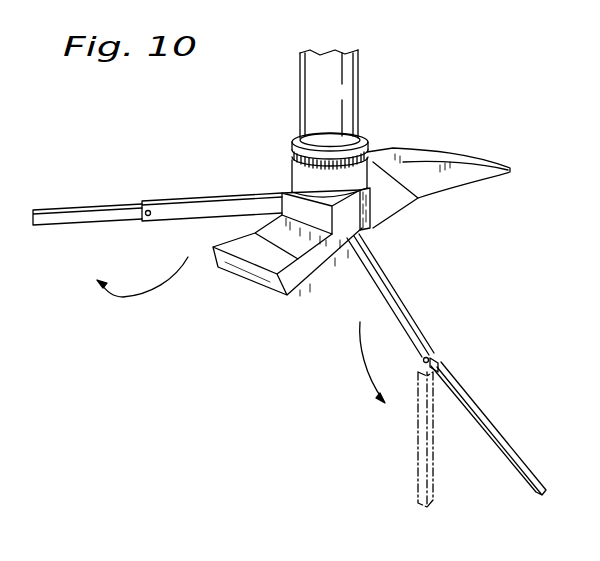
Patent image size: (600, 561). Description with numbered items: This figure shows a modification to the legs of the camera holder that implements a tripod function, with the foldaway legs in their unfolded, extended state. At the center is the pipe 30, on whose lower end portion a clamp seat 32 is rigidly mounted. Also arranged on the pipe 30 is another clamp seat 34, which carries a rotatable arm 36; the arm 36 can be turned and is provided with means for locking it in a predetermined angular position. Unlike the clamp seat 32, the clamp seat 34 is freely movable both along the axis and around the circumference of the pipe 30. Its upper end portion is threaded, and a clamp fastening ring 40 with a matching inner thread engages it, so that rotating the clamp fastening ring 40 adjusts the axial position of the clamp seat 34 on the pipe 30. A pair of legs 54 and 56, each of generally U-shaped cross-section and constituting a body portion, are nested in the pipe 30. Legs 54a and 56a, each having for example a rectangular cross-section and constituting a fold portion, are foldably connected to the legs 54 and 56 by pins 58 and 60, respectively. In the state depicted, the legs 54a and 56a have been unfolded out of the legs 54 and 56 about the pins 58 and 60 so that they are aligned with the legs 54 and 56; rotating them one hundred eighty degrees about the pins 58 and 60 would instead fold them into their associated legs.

The pipe 30 is at (360, 90).
The clamp seat 32 is at (272, 290).
The clamp seat 34 is at (396, 210).
The rotatable arm 36 is at (467, 168).
The clamp fastening ring 40 is at (291, 155).
The leg 54 is at (203, 203).
The leg 54a is at (87, 218).
The leg 56 is at (408, 317).
The leg 56a is at (472, 400).
The pin 58 is at (149, 217).
The pin 60 is at (423, 362).